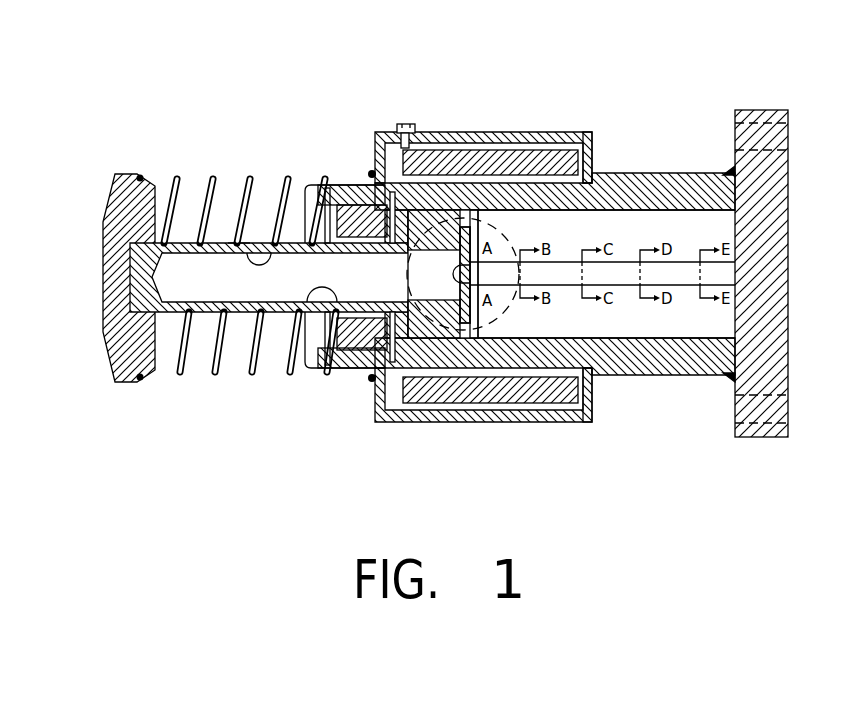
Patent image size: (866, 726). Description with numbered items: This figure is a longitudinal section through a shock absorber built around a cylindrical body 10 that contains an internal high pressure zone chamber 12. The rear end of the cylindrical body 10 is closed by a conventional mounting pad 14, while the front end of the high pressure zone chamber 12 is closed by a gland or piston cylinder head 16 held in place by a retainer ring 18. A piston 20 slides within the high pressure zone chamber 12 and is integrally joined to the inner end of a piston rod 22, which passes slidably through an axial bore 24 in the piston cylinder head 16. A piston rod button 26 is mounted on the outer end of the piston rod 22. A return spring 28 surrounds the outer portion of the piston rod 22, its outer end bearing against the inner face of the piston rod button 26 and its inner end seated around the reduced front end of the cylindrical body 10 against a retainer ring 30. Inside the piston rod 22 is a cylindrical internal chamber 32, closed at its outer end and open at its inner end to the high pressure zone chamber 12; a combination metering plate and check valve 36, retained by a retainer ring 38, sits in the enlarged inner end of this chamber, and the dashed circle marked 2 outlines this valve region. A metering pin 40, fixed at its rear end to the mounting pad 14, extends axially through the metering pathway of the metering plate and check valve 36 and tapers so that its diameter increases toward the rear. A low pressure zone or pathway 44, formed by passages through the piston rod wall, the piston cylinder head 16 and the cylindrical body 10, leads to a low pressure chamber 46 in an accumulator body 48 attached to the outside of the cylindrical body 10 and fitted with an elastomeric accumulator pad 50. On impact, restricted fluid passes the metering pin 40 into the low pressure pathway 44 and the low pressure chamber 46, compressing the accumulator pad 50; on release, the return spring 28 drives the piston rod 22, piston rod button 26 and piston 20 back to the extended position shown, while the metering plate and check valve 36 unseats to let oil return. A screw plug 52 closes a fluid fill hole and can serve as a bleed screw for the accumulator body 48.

The cylindrical body 10 is at (638, 355).
The high pressure zone chamber 12 is at (565, 315).
The mounting pad 14 is at (773, 208).
The piston cylinder head 16 is at (342, 368).
The retainer ring 18 is at (323, 180).
The piston 20 is at (442, 215).
The piston rod 22 is at (200, 310).
The axial bore 24 is at (310, 292).
The piston rod button 26 is at (123, 177).
The return spring 28 is at (177, 177).
The retainer ring 30 is at (372, 172).
The cylindrical internal chamber 32 is at (238, 240).
The metering plate and check valve 36 is at (457, 328).
The retainer ring 38 is at (487, 322).
The metering pin 40 is at (673, 287).
The low pressure zone or pathway 44 is at (388, 318).
The low pressure chamber 46 is at (586, 136).
The accumulator body 48 is at (490, 135).
The elastomeric accumulator pad 50 is at (539, 160).
The screw plug 52 is at (412, 126).
The detail circle 2 is at (503, 327).